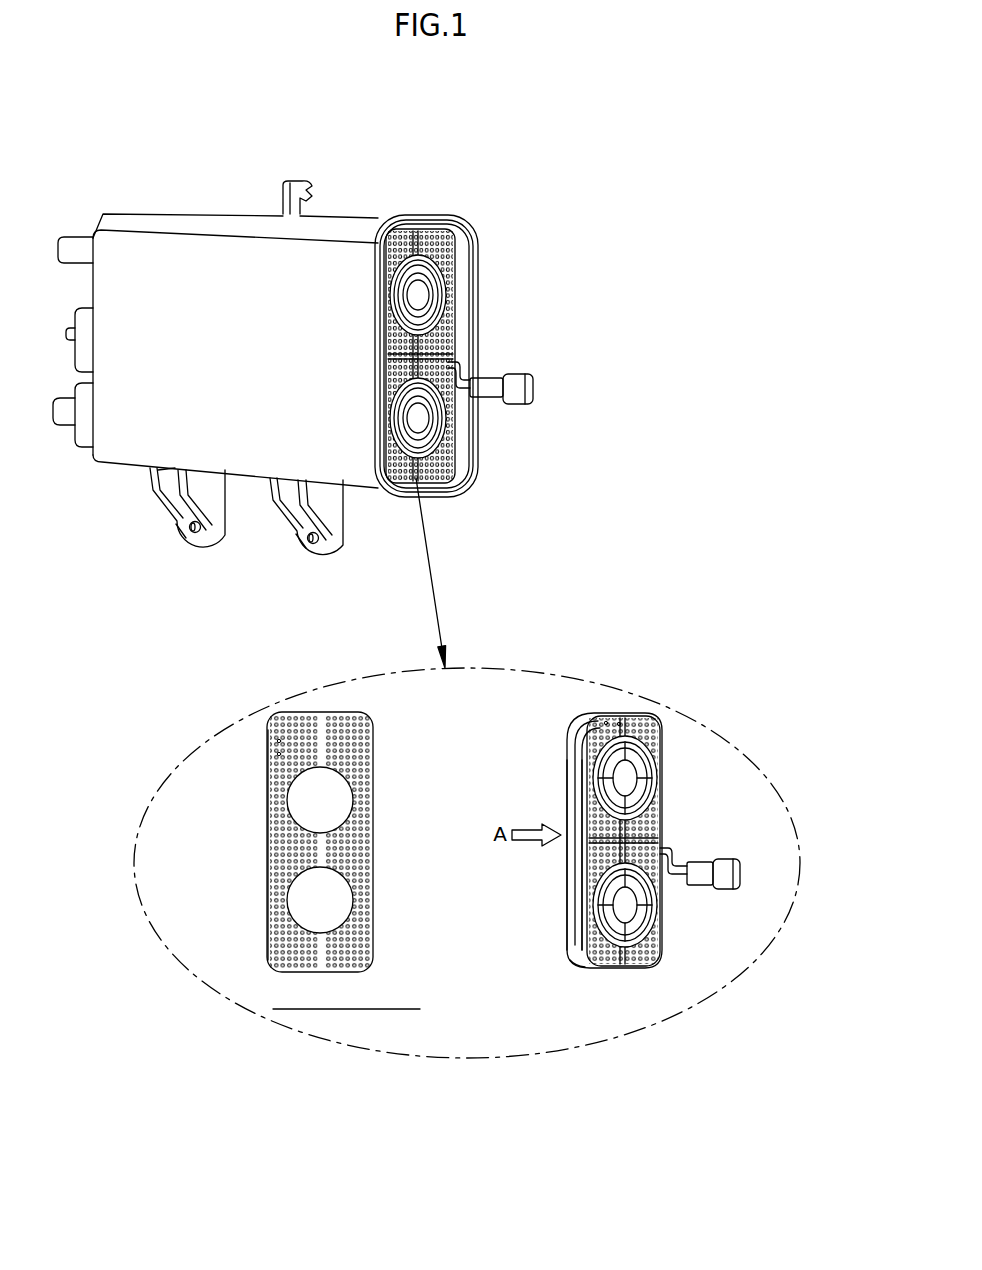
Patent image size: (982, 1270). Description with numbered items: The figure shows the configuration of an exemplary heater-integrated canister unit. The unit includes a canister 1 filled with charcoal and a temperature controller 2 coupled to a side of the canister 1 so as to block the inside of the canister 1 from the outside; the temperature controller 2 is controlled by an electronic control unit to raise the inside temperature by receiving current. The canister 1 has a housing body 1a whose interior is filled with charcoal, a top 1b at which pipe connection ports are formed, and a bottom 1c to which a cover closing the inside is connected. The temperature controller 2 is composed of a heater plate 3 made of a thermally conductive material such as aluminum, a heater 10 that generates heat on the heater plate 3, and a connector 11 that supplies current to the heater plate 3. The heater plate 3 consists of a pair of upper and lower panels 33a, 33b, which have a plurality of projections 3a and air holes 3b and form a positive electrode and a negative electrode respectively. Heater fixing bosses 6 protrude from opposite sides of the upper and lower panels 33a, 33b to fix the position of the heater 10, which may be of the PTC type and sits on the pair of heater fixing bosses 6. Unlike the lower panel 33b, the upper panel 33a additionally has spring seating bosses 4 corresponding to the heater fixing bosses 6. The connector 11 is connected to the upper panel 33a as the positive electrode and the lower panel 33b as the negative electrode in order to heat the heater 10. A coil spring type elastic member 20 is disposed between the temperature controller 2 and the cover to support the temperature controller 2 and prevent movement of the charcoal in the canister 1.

The canister 1 is at (110, 116).
The housing body 1a is at (178, 257).
The top 1b is at (93, 233).
The bottom 1c is at (393, 222).
The temperature controller 2 is at (577, 242).
The heater plate 3 is at (462, 250).
The projections 3a is at (608, 720).
The air holes 3b is at (622, 720).
The spring seating bosses 4 is at (632, 753).
The heater fixing bosses 6 is at (298, 893).
The heater 10 is at (420, 297).
The connector 11 is at (514, 377).
The elastic member 20 is at (423, 228).
The upper panel 33a is at (585, 950).
The lower panel 33b is at (570, 927).